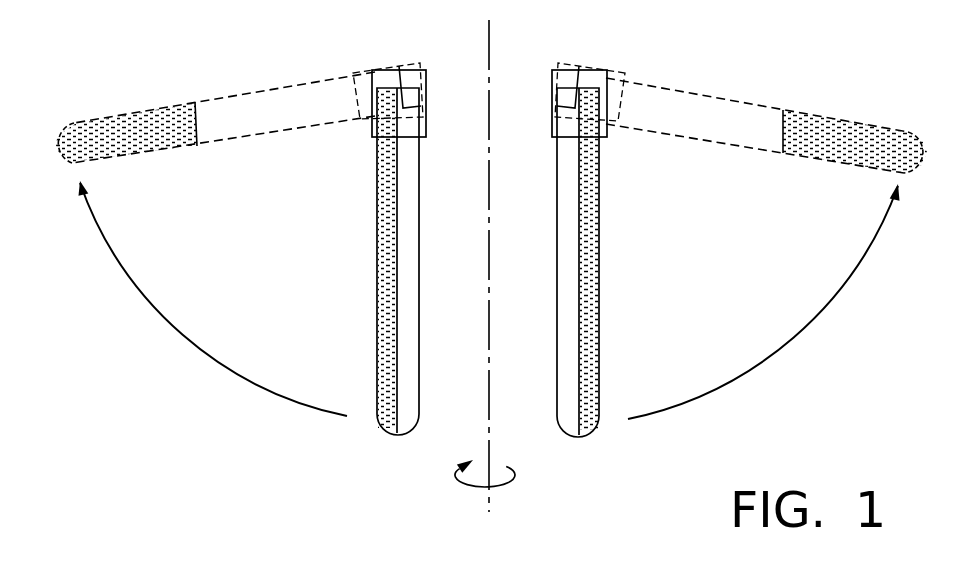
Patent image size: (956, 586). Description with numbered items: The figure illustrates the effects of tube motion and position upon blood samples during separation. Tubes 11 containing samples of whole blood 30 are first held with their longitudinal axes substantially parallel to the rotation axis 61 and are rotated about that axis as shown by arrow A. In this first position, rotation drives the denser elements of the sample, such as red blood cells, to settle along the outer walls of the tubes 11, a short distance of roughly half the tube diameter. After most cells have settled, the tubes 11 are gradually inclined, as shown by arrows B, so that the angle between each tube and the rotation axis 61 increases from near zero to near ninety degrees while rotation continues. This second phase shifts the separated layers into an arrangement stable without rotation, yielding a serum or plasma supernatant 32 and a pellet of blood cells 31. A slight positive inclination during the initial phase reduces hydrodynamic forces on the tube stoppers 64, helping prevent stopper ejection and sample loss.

The tube 11 is at (557, 366).
The whole blood sample 30 is at (595, 291).
The pellet of blood cells 31 is at (923, 143).
The serum or plasma supernatant 32 is at (813, 120).
The rotation axis 61 is at (490, 42).
The tube stopper 64 is at (367, 77).
The arrow A is at (466, 485).
The arrows B is at (177, 331).